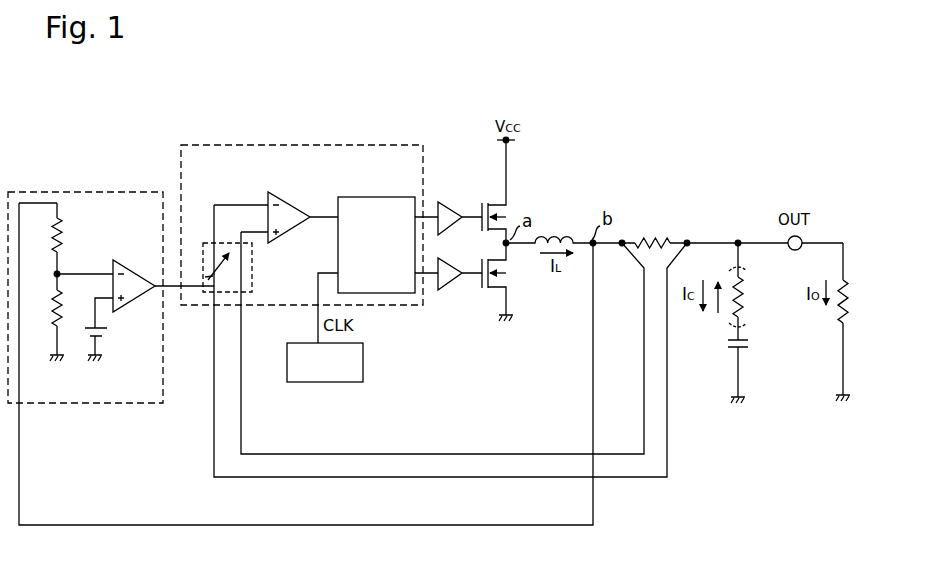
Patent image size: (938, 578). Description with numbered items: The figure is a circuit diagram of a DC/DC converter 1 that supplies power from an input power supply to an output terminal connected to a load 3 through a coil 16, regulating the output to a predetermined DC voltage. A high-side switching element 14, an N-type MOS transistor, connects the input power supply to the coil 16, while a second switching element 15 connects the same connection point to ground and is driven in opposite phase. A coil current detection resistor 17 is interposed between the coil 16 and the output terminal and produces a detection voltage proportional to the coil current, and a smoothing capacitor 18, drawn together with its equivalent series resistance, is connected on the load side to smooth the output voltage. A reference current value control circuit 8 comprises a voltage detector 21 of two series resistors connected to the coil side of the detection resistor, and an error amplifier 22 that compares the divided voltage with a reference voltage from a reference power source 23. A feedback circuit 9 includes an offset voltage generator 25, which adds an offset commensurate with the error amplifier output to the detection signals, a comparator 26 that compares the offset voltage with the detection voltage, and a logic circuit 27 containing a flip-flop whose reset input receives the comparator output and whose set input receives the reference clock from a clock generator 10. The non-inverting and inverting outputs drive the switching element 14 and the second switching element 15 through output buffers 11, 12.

The DC/DC converter 1 is at (472, 81).
The load 3 is at (853, 291).
The reference current value control circuit 8 is at (85, 193).
The feedback circuit 9 is at (397, 145).
The clock generator 10 is at (365, 362).
The output buffer 11 is at (449, 201).
The output buffer 12 is at (453, 280).
The switching element 14 is at (509, 203).
The second switching element 15 is at (512, 278).
The coil 16 is at (554, 229).
The coil current detection resistor 17 is at (649, 232).
The smoothing capacitor 18 is at (717, 346).
The voltage detector 21 is at (75, 241).
The error amplifier 22 is at (130, 261).
The reference power source 23 is at (107, 334).
The offset voltage generator 25 is at (203, 240).
The comparator 26 is at (283, 197).
The logic circuit 27 is at (376, 195).